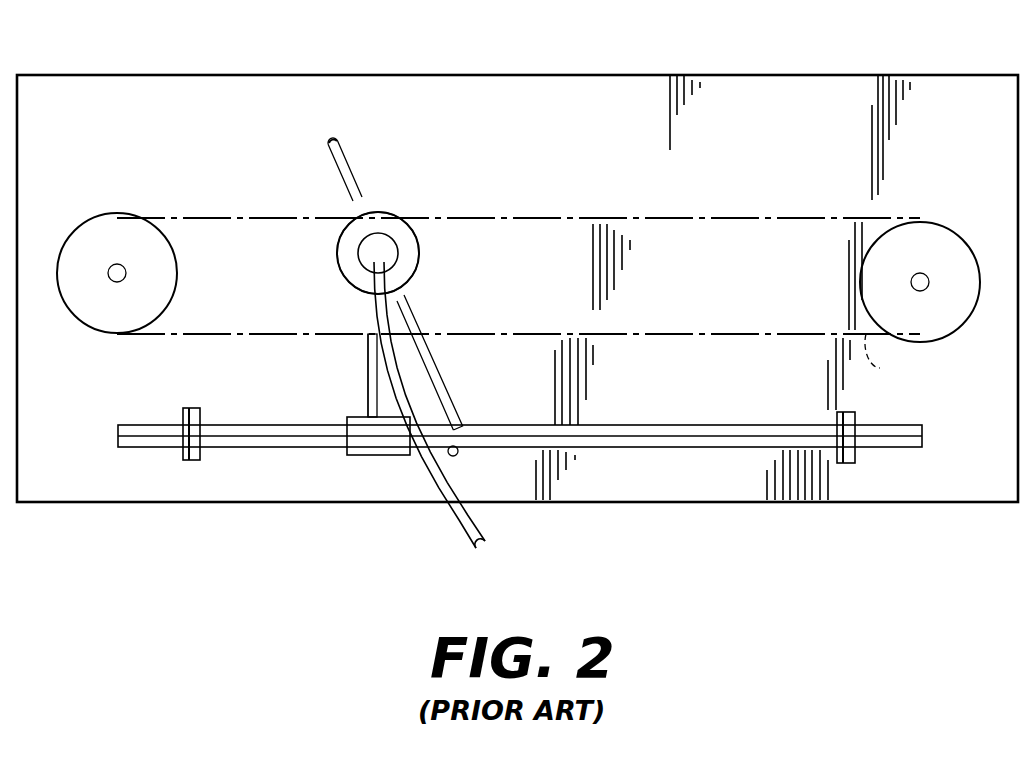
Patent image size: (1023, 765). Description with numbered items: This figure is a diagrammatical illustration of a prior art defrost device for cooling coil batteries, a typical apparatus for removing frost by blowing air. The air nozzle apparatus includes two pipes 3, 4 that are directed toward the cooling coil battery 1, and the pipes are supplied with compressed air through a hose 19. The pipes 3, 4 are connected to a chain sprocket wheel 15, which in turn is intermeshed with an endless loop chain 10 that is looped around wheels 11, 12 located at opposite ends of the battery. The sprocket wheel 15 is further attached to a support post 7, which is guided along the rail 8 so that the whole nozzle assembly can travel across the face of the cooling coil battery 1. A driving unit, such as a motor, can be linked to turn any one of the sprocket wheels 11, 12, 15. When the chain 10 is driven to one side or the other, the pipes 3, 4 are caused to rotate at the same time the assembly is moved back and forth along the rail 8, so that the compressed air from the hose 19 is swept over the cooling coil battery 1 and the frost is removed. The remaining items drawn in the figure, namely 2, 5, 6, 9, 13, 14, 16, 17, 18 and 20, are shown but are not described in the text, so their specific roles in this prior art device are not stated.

The cooling coil battery 1 is at (856, 92).
The filament guide assembly 2 is at (388, 269).
The pipe 3 is at (350, 174).
The pipe 4 is at (445, 410).
The guide rod end 5 is at (338, 141).
The pivot pin 6 is at (458, 456).
The support post 7 is at (369, 395).
The rail 8 is at (681, 436).
The guide disk 9 is at (409, 214).
The endless loop chain 10 is at (894, 358).
The wheel 11 is at (107, 312).
The wheel 12 is at (945, 243).
The upper belt run 13 is at (684, 178).
The lower belt run 14 is at (746, 338).
The chain sprocket wheel 15 is at (339, 247).
The slider 16 is at (362, 343).
The right stop 17 is at (845, 462).
The left stop 18 is at (191, 456).
The hose 19 is at (486, 540).
The central aperture 20 is at (396, 250).